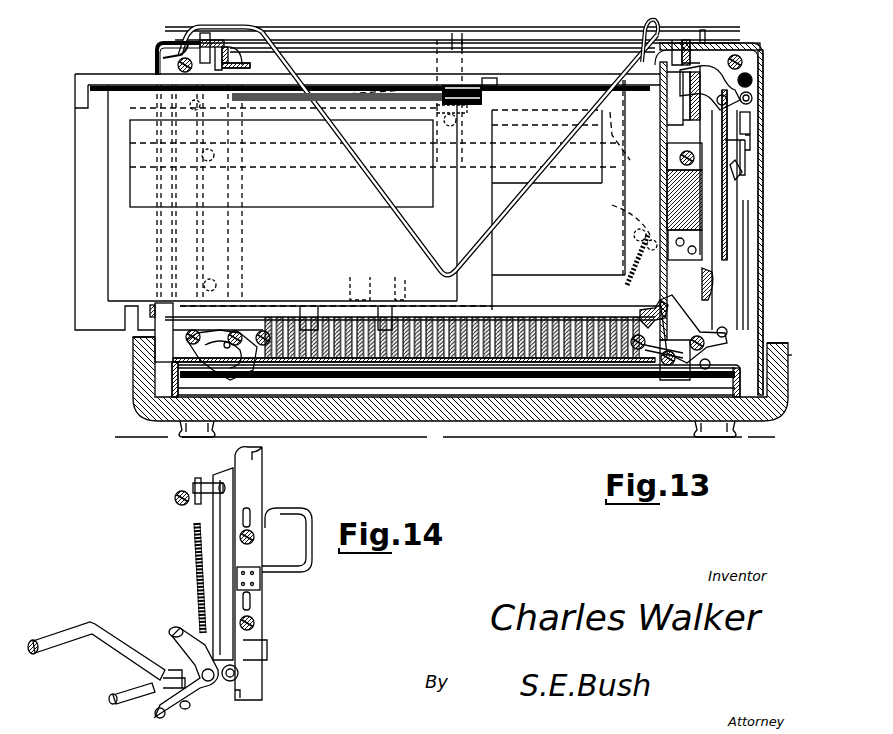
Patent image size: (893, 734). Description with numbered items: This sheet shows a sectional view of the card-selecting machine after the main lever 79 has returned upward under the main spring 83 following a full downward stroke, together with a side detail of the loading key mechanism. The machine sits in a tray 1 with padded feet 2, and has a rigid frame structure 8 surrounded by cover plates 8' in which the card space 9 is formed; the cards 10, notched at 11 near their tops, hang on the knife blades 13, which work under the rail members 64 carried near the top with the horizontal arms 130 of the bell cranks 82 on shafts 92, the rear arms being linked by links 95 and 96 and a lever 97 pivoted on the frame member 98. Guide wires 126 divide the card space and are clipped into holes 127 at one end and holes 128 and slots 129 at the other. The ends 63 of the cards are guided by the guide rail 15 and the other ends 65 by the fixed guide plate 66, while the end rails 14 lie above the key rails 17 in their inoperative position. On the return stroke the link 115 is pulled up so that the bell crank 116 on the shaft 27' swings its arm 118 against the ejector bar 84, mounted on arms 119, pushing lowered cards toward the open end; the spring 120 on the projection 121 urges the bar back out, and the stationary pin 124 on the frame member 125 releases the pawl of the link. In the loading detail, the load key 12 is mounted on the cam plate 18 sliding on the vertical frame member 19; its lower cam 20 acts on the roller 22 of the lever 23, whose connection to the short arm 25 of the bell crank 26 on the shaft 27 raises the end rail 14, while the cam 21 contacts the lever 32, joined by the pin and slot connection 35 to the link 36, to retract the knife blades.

In FIG. 13, the tray 1 is at (790, 350).
In FIG. 13, the padded feet 2 is at (214, 428).
In FIG. 13, the frame structure 8 is at (450, 379).
In FIG. 13, the cover plates 8' is at (748, 198).
In FIG. 13, the card space 9 is at (75, 77).
In FIG. 13, the cards 10 is at (384, 185).
In FIG. 13, the notches 11 is at (80, 100).
In FIG. 14, the load key 12 is at (285, 565).
In FIG. 13, the knife blades 13 is at (266, 33).
In FIG. 13, the end rails 14 is at (255, 332).
In FIG. 14, the end rails 14 is at (62, 650).
In FIG. 13, the guide rail 15 is at (197, 358).
In FIG. 13, the key rails 17 is at (538, 360).
In FIG. 14, the cam plate 18 is at (253, 595).
In FIG. 14, the vertical frame member 19 is at (255, 477).
In FIG. 14, the lower cam 20 is at (250, 648).
In FIG. 14, the cam 21 is at (223, 564).
In FIG. 14, the roller 22 is at (238, 672).
In FIG. 14, the lever 23 is at (190, 698).
In FIG. 14, the short arm 25 is at (156, 710).
In FIG. 14, the bell crank 26 is at (108, 640).
In FIG. 13, the shaft 27 is at (231, 317).
In FIG. 14, the shaft 27 is at (108, 691).
In FIG. 13, the shaft 27' is at (675, 368).
In FIG. 14, the lever 32 is at (215, 533).
In FIG. 14, the pin and slot connection 35 is at (176, 492).
In FIG. 14, the link 36 is at (200, 482).
In FIG. 13, the ends of the cards 63 is at (82, 173).
In FIG. 13, the rail members 64 is at (258, 60).
In FIG. 13, the other ends of the cards 65 is at (667, 96).
In FIG. 13, the fixed guide plate 66 is at (663, 194).
In FIG. 13, the main lever 79 is at (750, 163).
In FIG. 13, the bell cranks 82 is at (752, 80).
In FIG. 13, the main spring 83 is at (752, 98).
In FIG. 13, the ejector bar 84 is at (649, 307).
In FIG. 13, the shafts 92 is at (183, 75).
In FIG. 13, the link 95 is at (632, 140).
In FIG. 13, the link 96 is at (340, 88).
In FIG. 13, the lever 97 is at (492, 80).
In FIG. 13, the frame member 98 is at (455, 45).
In FIG. 13, the link 115 is at (748, 243).
In FIG. 13, the bell crank 116 is at (705, 345).
In FIG. 13, the arm 118 is at (705, 313).
In FIG. 13, the arms 119 is at (712, 277).
In FIG. 13, the spring 120 is at (625, 256).
In FIG. 13, the projection 121 is at (670, 206).
In FIG. 13, the stationary pin 124 is at (735, 140).
In FIG. 13, the frame member 125 is at (745, 125).
In FIG. 13, the guide wires 126 is at (497, 233).
In FIG. 13, the holes 127 is at (706, 30).
In FIG. 13, the holes 128 is at (163, 58).
In FIG. 13, the slots 129 is at (203, 30).
In FIG. 13, the horizontal arms 130 is at (180, 43).